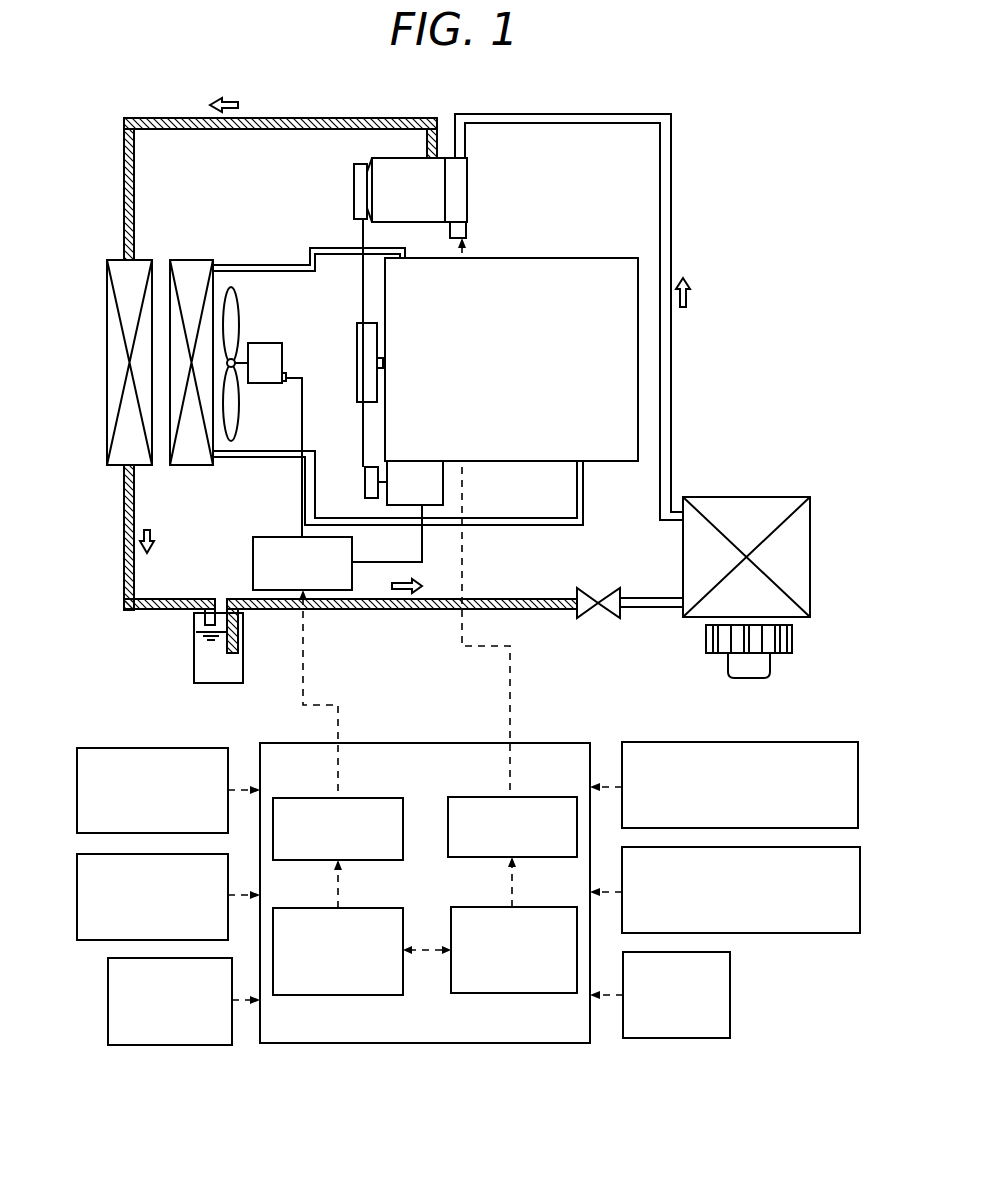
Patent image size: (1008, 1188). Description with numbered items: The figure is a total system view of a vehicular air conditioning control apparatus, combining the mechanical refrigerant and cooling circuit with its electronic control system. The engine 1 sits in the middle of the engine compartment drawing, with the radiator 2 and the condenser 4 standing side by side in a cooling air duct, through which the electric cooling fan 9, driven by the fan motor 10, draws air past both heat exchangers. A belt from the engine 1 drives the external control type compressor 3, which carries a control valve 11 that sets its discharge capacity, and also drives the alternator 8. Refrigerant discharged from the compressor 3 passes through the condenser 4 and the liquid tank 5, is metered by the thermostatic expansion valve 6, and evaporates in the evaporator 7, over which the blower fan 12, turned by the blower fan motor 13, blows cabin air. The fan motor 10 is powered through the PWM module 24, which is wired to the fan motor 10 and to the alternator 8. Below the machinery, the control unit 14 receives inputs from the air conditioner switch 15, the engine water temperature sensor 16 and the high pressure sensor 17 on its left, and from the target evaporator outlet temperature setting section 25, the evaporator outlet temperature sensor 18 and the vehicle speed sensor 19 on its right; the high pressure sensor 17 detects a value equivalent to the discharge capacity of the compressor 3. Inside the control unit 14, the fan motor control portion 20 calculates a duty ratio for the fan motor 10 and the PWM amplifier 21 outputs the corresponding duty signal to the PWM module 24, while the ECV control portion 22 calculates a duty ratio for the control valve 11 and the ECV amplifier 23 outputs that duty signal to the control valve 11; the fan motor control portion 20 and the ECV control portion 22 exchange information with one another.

The engine 1 is at (578, 258).
The radiator 2 is at (192, 260).
The external control type compressor 3 is at (388, 158).
The condenser 4 is at (145, 260).
The liquid tank 5 is at (194, 652).
The thermostatic expansion valve 6 is at (596, 590).
The evaporator 7 is at (750, 497).
The alternator 8 is at (387, 503).
The electric cooling fan 9 is at (237, 291).
The fan motor 10 is at (270, 343).
The control valve 11 is at (467, 230).
The blower fan 12 is at (706, 640).
The blower fan motor 13 is at (728, 668).
The control unit 14 is at (566, 743).
The air conditioner switch 15 is at (80, 748).
The engine water temperature sensor 16 is at (80, 854).
The high pressure sensor 17 is at (108, 999).
The evaporator outlet temperature sensor 18 is at (848, 847).
The vehicle speed sensor 19 is at (730, 995).
The fan motor control portion 20 is at (290, 908).
The PWM amplifier 21 is at (290, 798).
The ECV control portion 22 is at (552, 907).
The ECV amplifier 23 is at (552, 797).
The PWM module 24 is at (253, 565).
The target evaporator outlet temperature setting section 25 is at (848, 742).